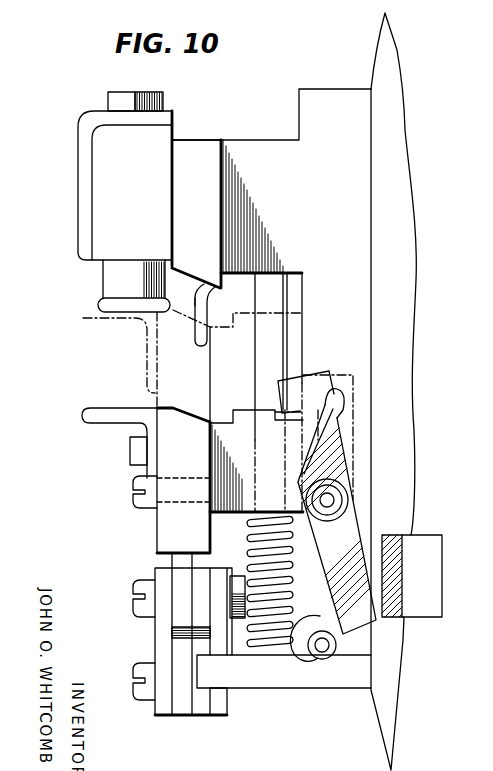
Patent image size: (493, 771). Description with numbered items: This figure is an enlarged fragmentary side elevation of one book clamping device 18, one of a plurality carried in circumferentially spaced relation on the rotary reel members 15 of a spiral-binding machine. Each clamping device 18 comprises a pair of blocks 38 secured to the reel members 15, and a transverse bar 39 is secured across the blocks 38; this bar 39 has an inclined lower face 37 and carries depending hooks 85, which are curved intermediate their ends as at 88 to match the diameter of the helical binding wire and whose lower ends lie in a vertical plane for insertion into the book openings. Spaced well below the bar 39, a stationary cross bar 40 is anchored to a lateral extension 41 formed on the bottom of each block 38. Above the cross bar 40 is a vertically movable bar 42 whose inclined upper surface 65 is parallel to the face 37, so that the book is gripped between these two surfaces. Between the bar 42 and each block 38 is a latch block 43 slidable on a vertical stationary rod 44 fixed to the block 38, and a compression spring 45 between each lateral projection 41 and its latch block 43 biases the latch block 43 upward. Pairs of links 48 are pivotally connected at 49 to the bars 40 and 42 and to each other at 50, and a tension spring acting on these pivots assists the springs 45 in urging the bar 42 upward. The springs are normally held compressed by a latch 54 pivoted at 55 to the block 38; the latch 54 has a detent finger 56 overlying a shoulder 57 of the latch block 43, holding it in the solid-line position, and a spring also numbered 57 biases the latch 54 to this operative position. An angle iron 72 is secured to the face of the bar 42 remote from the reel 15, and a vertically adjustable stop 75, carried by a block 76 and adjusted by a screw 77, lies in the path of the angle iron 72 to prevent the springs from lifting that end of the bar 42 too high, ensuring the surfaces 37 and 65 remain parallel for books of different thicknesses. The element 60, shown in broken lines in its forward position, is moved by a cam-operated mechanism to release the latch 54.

The rotary reel member 15 is at (373, 58).
The book clamping device 18 is at (57, 234).
The inclined lower face 37 is at (189, 284).
The block 38 is at (313, 113).
The transverse bar 39 is at (203, 157).
The stationary cross bar 40 is at (185, 705).
The lateral extension 41 is at (253, 682).
The vertically movable bar 42 is at (177, 522).
The latch block 43 is at (229, 430).
The vertical stationary rod 44 is at (273, 643).
The compression spring 45 is at (249, 551).
The link 48 is at (158, 638).
The pivotal connection 49 is at (133, 490).
The pivotal connection 50 is at (133, 596).
The latch 54 is at (356, 528).
The pivot 55 is at (334, 500).
The detent finger 56 is at (301, 398).
The shoulder 57 is at (297, 419).
The element 60 is at (442, 564).
The inclined upper surface 65 is at (197, 380).
The angle iron 72 is at (137, 326).
The vertically adjustable stop 75 is at (113, 290).
The block 76 is at (103, 178).
The screw 77 is at (135, 91).
The depending hook 85 is at (217, 299).
The curved portion 88 is at (197, 297).